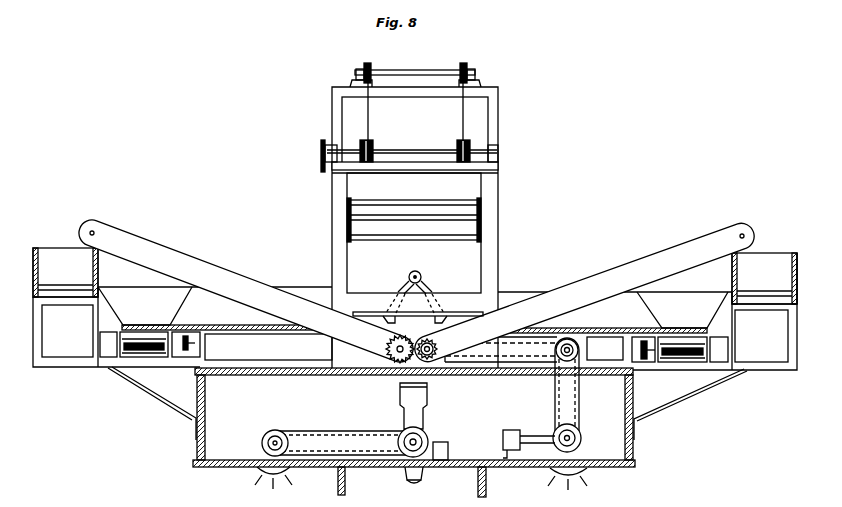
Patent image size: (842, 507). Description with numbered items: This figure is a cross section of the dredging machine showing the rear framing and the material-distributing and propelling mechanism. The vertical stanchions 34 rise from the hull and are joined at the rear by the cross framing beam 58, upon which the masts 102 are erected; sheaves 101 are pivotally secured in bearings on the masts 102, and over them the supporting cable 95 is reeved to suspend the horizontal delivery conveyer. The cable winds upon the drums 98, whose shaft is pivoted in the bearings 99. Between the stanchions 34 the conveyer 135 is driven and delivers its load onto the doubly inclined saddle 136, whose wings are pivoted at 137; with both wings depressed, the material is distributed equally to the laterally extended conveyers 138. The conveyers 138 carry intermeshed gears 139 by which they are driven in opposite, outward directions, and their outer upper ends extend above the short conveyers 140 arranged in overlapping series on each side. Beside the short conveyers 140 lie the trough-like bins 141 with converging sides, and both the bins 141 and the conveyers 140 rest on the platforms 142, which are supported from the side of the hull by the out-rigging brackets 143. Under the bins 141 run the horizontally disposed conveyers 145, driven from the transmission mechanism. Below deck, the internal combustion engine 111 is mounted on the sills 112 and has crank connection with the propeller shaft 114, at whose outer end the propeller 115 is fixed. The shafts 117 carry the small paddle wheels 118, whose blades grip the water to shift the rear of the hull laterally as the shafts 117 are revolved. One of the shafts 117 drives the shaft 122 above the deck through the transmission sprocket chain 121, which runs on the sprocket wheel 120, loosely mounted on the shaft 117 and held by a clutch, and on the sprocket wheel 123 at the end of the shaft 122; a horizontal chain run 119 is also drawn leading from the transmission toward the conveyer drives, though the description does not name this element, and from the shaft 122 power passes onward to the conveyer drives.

The vertical stanchions 34 is at (333, 232).
The cross framing beam 58 is at (500, 166).
The supporting cable 95 is at (463, 124).
The drums 98 is at (373, 143).
The bearings 99 is at (326, 150).
The sheaves 101 is at (411, 78).
The masts 102 is at (498, 124).
The internal combustion engine 111 is at (404, 396).
The sills 112 is at (398, 447).
The propeller shaft 114 is at (407, 467).
The propeller 115 is at (420, 482).
The shafts 117 is at (293, 440).
The paddle wheels 118 is at (258, 478).
The horizontal chain 119 is at (522, 365).
The sprocket wheels 120 is at (292, 440).
The transmission sprocket chain 121 is at (582, 402).
The shaft 122 is at (572, 343).
The sprocket wheel 123 is at (579, 348).
The conveyer 135 is at (385, 231).
The doubly inclined saddle 136 is at (405, 286).
The pivot 137 is at (416, 272).
The laterally extended conveyers 138 is at (258, 286).
The meshed gears 139 is at (418, 337).
The short conveyers 140 is at (53, 256).
The trough-like bins 141 is at (118, 293).
The platforms 142 is at (49, 364).
The out-rigging brackets 143 is at (163, 398).
The horizontally disposed conveyers 145 is at (146, 347).